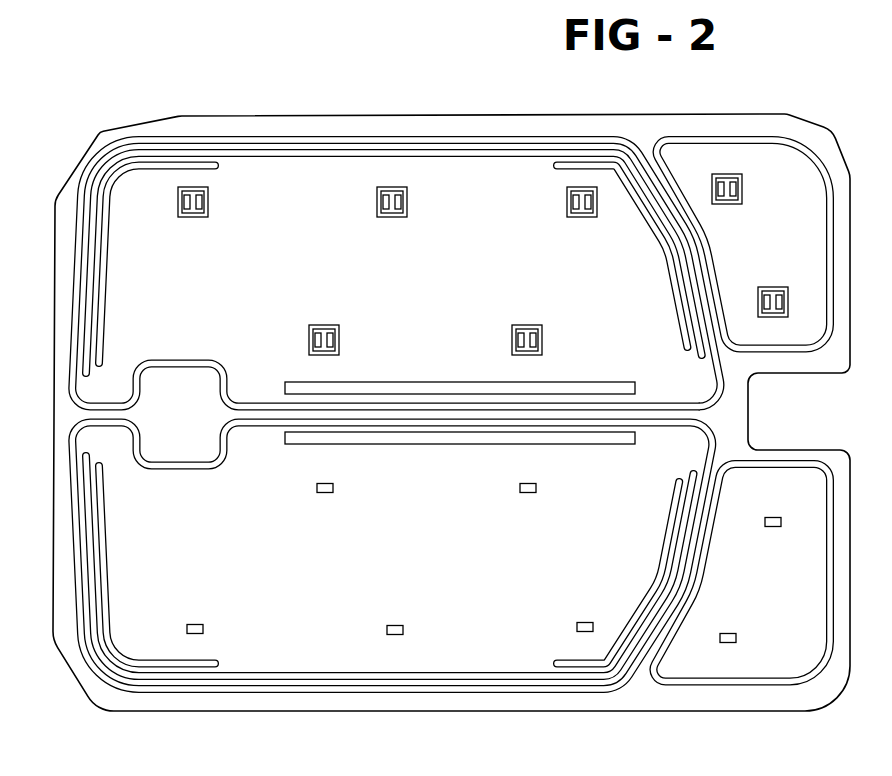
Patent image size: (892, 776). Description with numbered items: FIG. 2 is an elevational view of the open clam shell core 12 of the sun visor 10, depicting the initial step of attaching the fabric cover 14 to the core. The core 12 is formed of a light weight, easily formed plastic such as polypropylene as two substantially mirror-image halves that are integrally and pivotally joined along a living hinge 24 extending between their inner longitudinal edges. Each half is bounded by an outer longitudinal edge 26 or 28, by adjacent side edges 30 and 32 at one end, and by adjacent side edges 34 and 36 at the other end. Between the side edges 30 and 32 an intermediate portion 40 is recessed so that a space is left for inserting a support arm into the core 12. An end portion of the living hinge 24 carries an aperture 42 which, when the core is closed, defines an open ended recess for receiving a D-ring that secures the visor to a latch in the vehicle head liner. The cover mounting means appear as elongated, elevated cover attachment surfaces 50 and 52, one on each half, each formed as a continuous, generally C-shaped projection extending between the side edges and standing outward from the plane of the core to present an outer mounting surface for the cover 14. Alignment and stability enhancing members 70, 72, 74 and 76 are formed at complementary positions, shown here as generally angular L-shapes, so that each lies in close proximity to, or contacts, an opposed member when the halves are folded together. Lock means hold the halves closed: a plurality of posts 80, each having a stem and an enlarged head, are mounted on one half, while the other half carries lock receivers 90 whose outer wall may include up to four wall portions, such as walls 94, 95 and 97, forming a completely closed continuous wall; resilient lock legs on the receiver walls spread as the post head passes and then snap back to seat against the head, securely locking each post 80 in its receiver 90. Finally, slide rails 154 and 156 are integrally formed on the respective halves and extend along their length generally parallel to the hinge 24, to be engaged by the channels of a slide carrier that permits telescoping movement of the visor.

The sun visor 10 is at (97, 128).
The core 12 is at (768, 170).
The cover 14 is at (838, 148).
The living hinge 24 is at (253, 424).
The outer longitudinal edge 26 is at (457, 133).
The outer longitudinal edge 28 is at (432, 692).
The side edge 30 is at (826, 233).
The side edge 32 is at (823, 535).
The side edge 34 is at (72, 245).
The side edge 36 is at (83, 612).
The intermediate portion 40 is at (800, 450).
The aperture 42 is at (180, 464).
The cover attachment surface 50 is at (107, 637).
The cover attachment surface 52 is at (97, 312).
The alignment and stability enhancing member 70 is at (122, 281).
The alignment and stability enhancing member 72 is at (622, 225).
The alignment and stability enhancing member 74 is at (135, 538).
The alignment and stability enhancing member 76 is at (653, 510).
The post 80 is at (518, 487).
The lock receiver 90 is at (462, 272).
The wall portion 94 is at (180, 198).
The wall portion 95 is at (213, 183).
The wall portion 97 is at (192, 217).
The slide rail 154 is at (290, 382).
The slide rail 156 is at (300, 445).